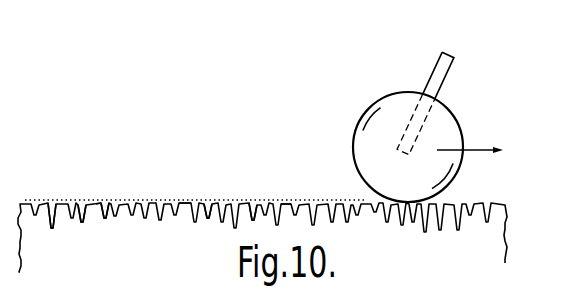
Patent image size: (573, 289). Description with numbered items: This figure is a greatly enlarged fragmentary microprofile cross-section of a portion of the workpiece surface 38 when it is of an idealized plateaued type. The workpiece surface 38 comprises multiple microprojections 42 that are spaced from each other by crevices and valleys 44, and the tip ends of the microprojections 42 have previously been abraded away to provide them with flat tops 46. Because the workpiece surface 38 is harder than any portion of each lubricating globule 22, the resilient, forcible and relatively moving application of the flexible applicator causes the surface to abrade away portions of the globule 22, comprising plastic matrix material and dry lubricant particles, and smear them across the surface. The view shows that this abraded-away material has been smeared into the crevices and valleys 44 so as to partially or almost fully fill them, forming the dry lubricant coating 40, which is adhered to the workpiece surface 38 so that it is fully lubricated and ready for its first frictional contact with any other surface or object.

The lubricating globule 22 is at (390, 87).
The workpiece surface 38 is at (100, 241).
The lubricating coating 40 is at (167, 186).
The microprojections 42 is at (104, 212).
The crevices and valleys 44 is at (53, 230).
The flat tops 46 is at (84, 204).